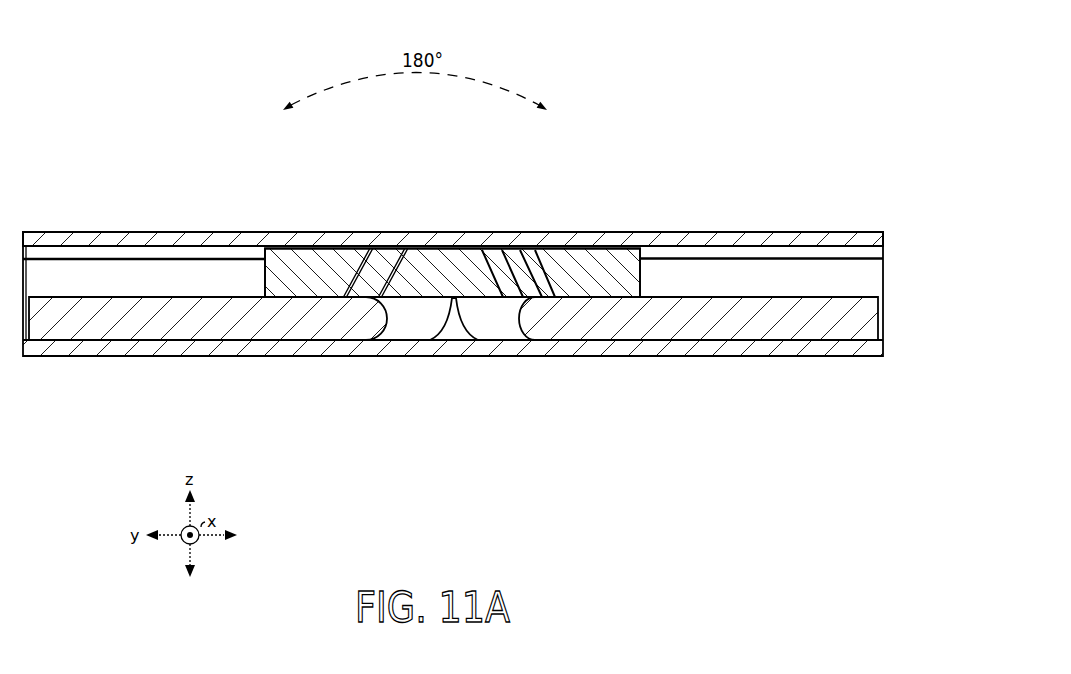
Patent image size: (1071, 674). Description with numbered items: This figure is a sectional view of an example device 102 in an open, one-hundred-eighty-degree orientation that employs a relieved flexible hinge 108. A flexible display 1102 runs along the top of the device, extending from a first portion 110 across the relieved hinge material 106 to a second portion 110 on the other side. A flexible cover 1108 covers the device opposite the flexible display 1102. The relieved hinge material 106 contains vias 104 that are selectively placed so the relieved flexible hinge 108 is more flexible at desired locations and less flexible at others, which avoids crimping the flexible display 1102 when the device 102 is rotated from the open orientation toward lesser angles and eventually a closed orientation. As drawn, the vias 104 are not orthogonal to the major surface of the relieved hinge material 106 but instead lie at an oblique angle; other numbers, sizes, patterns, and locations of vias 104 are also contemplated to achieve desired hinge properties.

The device 102 is at (452, 242).
The vias 104 is at (405, 263).
The relieved hinge material 106 is at (338, 253).
The relieved flexible hinge 108 is at (419, 215).
The first portion and second portion 110 is at (106, 350).
The flexible display 1102 is at (150, 232).
The flexible cover 1108 is at (867, 357).